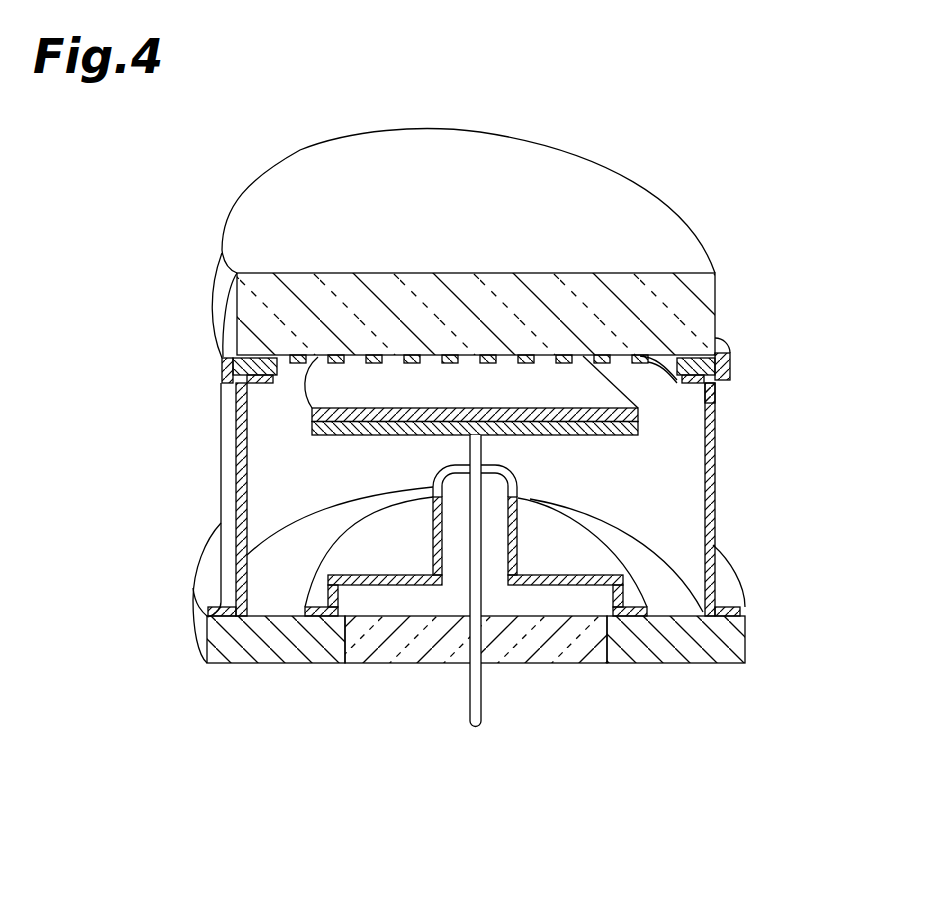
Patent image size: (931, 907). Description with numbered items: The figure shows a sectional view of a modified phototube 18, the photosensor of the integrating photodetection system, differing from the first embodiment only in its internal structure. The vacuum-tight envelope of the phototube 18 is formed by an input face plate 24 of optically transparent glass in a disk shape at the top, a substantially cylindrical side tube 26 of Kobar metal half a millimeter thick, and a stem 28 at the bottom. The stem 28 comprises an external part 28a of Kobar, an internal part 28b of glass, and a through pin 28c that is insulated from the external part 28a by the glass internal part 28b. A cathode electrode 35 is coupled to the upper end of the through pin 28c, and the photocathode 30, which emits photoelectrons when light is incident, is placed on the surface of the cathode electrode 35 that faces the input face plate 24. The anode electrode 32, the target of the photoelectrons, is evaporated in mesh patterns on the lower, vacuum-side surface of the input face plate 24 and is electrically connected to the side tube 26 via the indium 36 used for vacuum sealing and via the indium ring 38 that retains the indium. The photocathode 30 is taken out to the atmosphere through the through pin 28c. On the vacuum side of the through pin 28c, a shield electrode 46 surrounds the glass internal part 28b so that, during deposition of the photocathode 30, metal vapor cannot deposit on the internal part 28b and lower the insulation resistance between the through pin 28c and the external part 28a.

The phototube 18 is at (135, 642).
The input face plate 24 is at (707, 327).
The side tube 26 is at (716, 500).
The stem 28 is at (476, 650).
The external part 28a is at (703, 665).
The internal part 28b is at (575, 665).
The through pin 28c is at (479, 617).
The photocathode 30 is at (297, 387).
The anode electrode 32 is at (643, 357).
The cathode electrode 35 is at (302, 425).
The indium 36 is at (707, 388).
The indium ring 38 is at (732, 366).
The shield electrode 46 is at (578, 543).